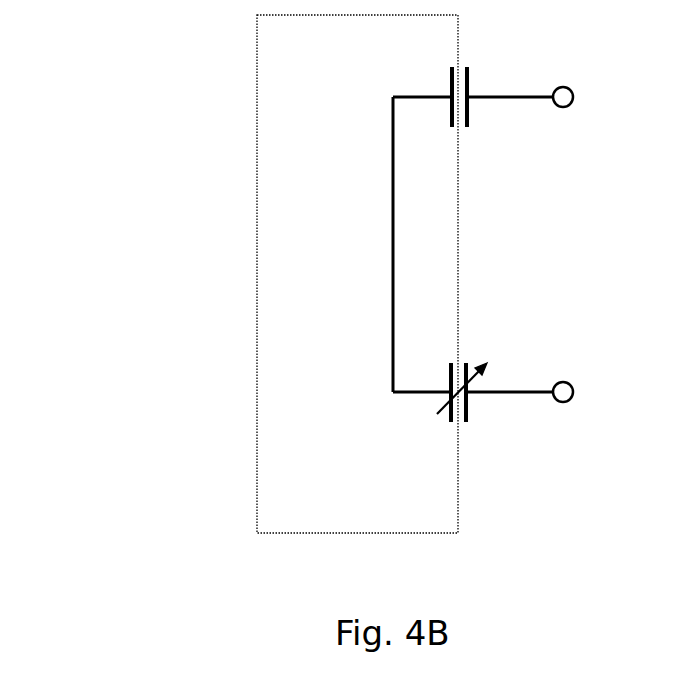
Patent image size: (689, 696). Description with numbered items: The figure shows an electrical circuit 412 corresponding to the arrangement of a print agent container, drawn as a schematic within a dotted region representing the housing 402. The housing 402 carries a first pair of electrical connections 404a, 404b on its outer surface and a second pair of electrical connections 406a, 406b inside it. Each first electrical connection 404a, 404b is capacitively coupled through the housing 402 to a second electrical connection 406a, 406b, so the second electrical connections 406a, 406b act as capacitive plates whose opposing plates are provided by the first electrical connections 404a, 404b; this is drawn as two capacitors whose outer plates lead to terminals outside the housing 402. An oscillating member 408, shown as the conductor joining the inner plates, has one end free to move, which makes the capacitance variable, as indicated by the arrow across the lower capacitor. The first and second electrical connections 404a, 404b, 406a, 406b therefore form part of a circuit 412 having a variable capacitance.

The housing 402 is at (258, 320).
The first electrical connection 404a is at (468, 78).
The first electrical connection 404b is at (468, 412).
The second electrical connection 406a is at (450, 85).
The second electrical connection 406b is at (447, 412).
The oscillating member 408 is at (392, 261).
The electrical circuit 412 is at (183, 102).